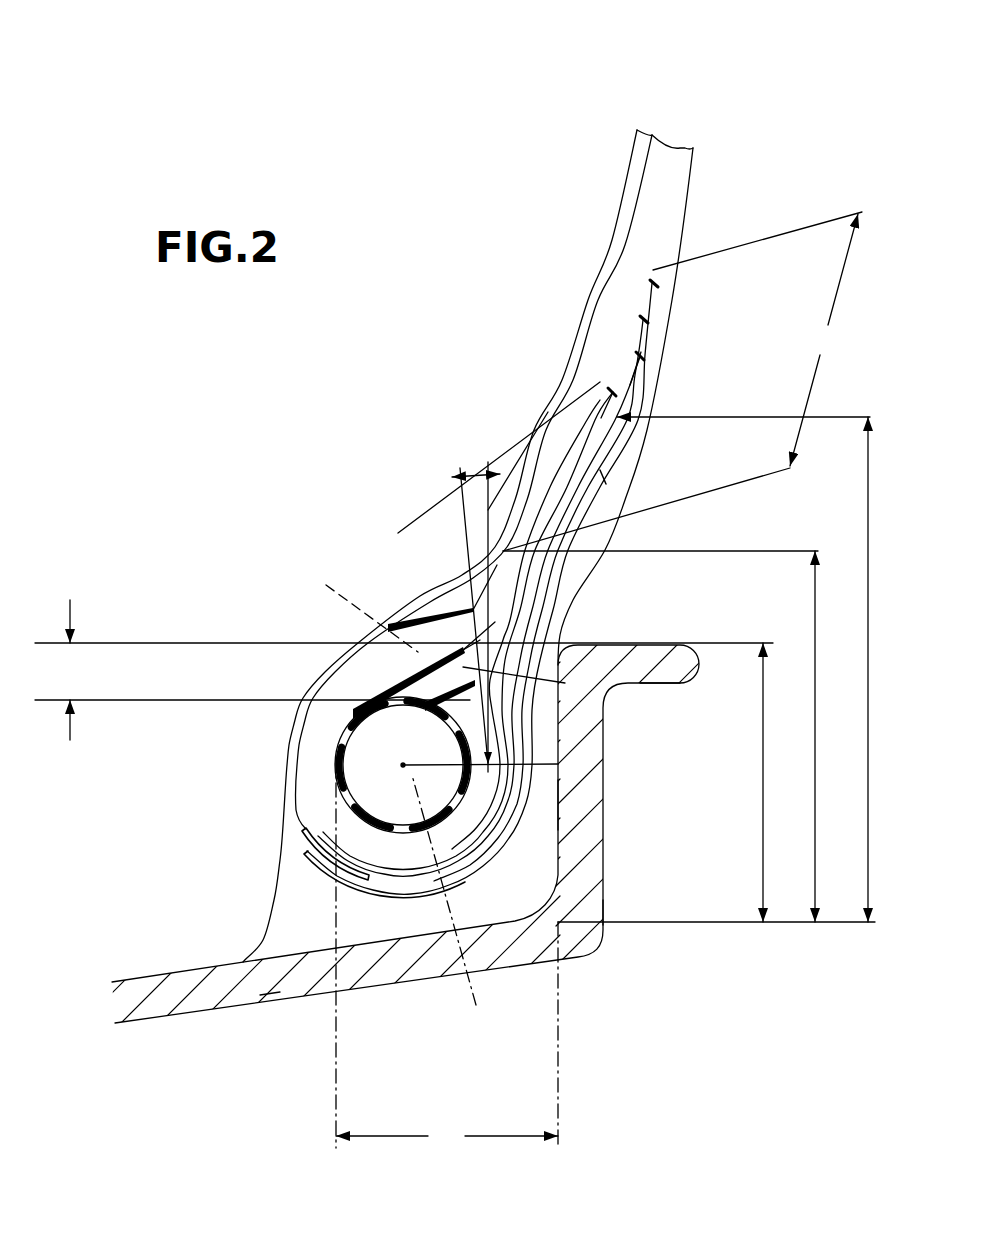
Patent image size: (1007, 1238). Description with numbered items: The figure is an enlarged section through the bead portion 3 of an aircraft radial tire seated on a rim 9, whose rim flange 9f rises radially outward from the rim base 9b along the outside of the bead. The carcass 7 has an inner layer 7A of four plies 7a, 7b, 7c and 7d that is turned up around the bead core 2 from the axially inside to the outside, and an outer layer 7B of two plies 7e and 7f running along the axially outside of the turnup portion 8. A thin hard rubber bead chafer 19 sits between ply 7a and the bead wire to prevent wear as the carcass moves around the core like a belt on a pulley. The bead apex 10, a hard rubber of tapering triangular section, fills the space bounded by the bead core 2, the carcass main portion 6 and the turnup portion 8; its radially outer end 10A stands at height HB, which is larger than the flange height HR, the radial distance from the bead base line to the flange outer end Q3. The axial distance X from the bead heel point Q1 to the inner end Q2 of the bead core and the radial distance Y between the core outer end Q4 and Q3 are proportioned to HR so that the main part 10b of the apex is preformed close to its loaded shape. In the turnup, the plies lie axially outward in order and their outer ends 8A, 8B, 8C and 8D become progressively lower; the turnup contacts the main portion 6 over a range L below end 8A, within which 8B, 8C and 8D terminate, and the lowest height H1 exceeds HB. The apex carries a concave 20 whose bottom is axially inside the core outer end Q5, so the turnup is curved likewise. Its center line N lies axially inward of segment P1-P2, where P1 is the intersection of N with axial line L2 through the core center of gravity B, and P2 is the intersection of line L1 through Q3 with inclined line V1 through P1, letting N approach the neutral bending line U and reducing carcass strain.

The bead core 2 is at (380, 823).
The tire bead portion 3 is at (140, 870).
The carcass main portion 6 is at (637, 240).
The carcass 7 is at (430, 1088).
The inner layer 7A is at (397, 867).
The outer layer 7B is at (450, 862).
The carcass ply 7a is at (652, 283).
The carcass ply 7b is at (643, 320).
The carcass ply 7c is at (640, 357).
The carcass ply 7d is at (612, 393).
The carcass ply 7e is at (304, 831).
The carcass ply 7f is at (306, 852).
The turnup portion 8 is at (573, 477).
The radially outer end of ply 7a turnup 8A is at (656, 270).
The radially outer end of ply 7b turnup 8B is at (648, 312).
The radially outer end of ply 7c turnup 8C is at (641, 350).
The radially outer end of ply 7d turnup 8D is at (617, 416).
The rim 9 is at (586, 972).
The rim base 9b is at (268, 993).
The rim flange 9f is at (590, 800).
The bead apex 10 is at (452, 580).
The radially outer end of bead apex 10A is at (500, 560).
The main part of bead apex 10b is at (452, 706).
The bead chafer 19 is at (616, 923).
The concave 20 is at (600, 683).
The contact range L is at (682, 381).
The line through outer end of rim flange L1 is at (155, 643).
The straight line through center of gravity of bead core L2 is at (535, 800).
The height of lowest turnup portion H1 is at (728, 669).
The radial height of bead apex outer end HB is at (669, 736).
The flange height HR is at (763, 782).
The axial distance X is at (447, 955).
The radial distance Y is at (70, 679).
The inclined line V1 is at (486, 524).
The center line of turnup portion N is at (362, 605).
The neutral line U is at (405, 727).
The center of gravity of bead core B is at (403, 765).
The intersection point P1 is at (493, 750).
The intersection point P2 is at (470, 612).
The bead heel point Q1 is at (560, 927).
The inner end of bead core Q2 is at (335, 777).
The radially outer end of rim flange Q3 is at (565, 683).
The radially outer end of bead core Q4 is at (387, 690).
The axially outer end of bead core Q5 is at (533, 767).